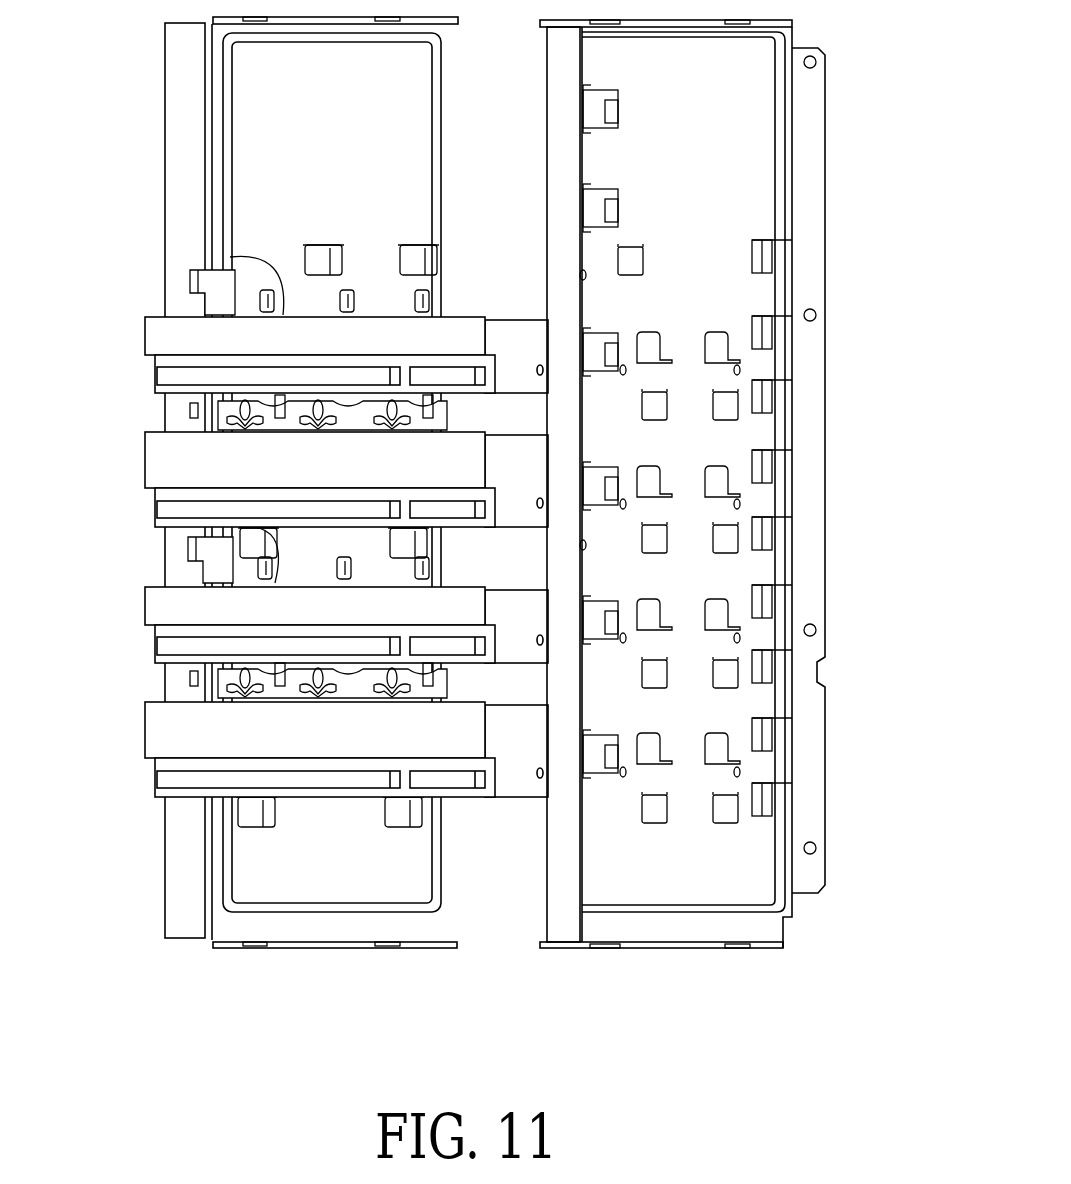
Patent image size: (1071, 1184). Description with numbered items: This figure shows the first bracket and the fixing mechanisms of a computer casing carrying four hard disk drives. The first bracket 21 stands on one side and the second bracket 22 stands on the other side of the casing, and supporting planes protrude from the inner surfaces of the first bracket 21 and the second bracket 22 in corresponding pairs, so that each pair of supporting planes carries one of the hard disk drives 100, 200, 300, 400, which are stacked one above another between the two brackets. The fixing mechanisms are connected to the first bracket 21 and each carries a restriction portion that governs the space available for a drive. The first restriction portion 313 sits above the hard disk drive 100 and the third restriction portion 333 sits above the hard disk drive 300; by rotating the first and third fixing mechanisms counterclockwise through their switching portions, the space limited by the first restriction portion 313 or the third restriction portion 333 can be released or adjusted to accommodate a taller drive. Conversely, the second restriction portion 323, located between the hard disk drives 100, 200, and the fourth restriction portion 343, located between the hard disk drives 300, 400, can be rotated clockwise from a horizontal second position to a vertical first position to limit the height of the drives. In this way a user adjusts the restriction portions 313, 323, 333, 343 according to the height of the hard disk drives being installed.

The first bracket 21 is at (185, 178).
The second bracket 22 is at (775, 175).
The hard disk drive 100 is at (166, 338).
The hard disk drive 200 is at (165, 465).
The hard disk drive 300 is at (170, 605).
The hard disk drive 400 is at (175, 730).
The first restriction portion 313 is at (285, 305).
The second restriction portion 323 is at (275, 423).
The third restriction portion 333 is at (245, 565).
The fourth restriction portion 343 is at (260, 680).